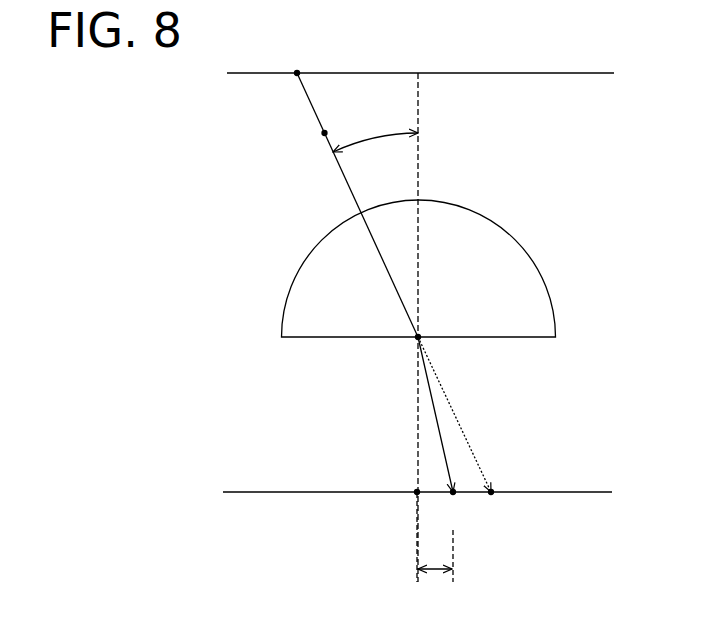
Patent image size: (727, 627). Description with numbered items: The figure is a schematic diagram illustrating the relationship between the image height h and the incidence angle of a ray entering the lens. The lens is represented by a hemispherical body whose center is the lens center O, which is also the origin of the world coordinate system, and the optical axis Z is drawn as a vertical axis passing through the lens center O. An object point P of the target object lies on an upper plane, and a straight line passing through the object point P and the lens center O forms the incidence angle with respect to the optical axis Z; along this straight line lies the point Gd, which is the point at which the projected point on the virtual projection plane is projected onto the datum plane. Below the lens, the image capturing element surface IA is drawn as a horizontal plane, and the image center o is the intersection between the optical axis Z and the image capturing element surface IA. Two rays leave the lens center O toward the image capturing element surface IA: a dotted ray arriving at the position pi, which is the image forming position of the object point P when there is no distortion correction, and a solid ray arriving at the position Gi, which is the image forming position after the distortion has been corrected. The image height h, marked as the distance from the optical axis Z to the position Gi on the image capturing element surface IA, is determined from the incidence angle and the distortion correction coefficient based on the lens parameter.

The object point P is at (353, 190).
The point projected on datum plane Gd is at (302, 141).
The optical axis Z is at (430, 327).
The lens center O is at (420, 335).
The image capturing element surface IA is at (431, 500).
The image center o is at (415, 491).
The image forming position after distortion correction Gi is at (437, 433).
The image forming position without distortion correction pi is at (463, 515).
The image height h is at (435, 548).